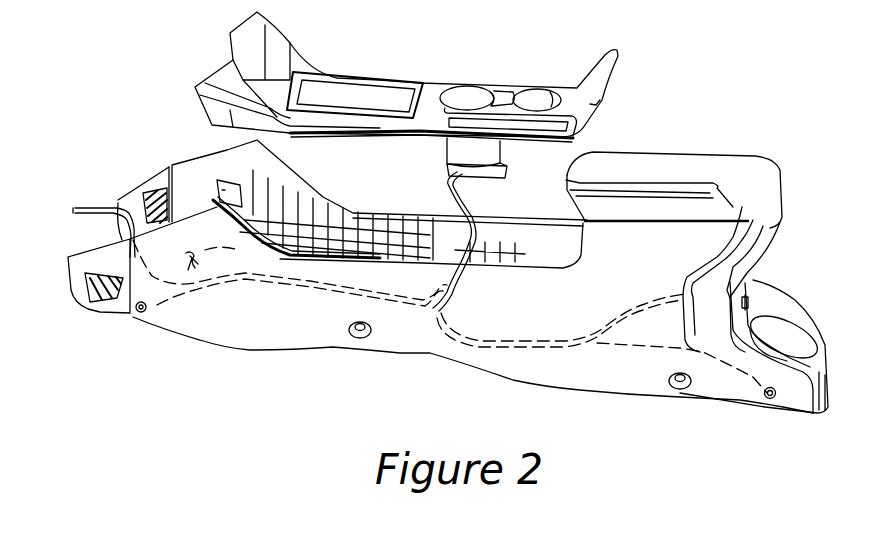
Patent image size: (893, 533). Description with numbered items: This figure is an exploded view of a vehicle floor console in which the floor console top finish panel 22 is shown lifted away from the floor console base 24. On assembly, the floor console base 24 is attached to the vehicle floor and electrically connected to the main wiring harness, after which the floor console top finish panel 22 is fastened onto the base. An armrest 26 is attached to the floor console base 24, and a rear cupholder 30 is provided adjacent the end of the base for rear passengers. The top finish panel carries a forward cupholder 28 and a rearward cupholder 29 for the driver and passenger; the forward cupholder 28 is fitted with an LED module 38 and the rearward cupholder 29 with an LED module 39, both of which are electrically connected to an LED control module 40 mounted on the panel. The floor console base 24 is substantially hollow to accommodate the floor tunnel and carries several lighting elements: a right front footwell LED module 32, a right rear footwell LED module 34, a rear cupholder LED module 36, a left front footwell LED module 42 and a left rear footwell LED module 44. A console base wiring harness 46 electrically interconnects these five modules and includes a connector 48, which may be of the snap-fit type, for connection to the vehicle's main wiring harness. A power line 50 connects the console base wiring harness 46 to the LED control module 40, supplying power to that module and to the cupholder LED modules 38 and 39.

The floor console top finish panel 22 is at (437, 86).
The floor console base 24 is at (633, 383).
The armrest 26 is at (707, 160).
The forward cupholder 28 is at (466, 90).
The rearward cupholder 29 is at (527, 94).
The rear cupholder 30 is at (783, 333).
The right front footwell LED module 32 is at (175, 250).
The right rear footwell LED module 34 is at (837, 407).
The rear cupholder LED module 36 is at (770, 303).
The LED module 38 is at (490, 94).
The LED module 39 is at (547, 94).
The LED control module 40 is at (506, 168).
The left front footwell LED module 42 is at (141, 314).
The left rear footwell LED module 44 is at (773, 402).
The console base wiring harness 46 is at (216, 258).
The connector 48 is at (67, 208).
The power line 50 is at (447, 206).